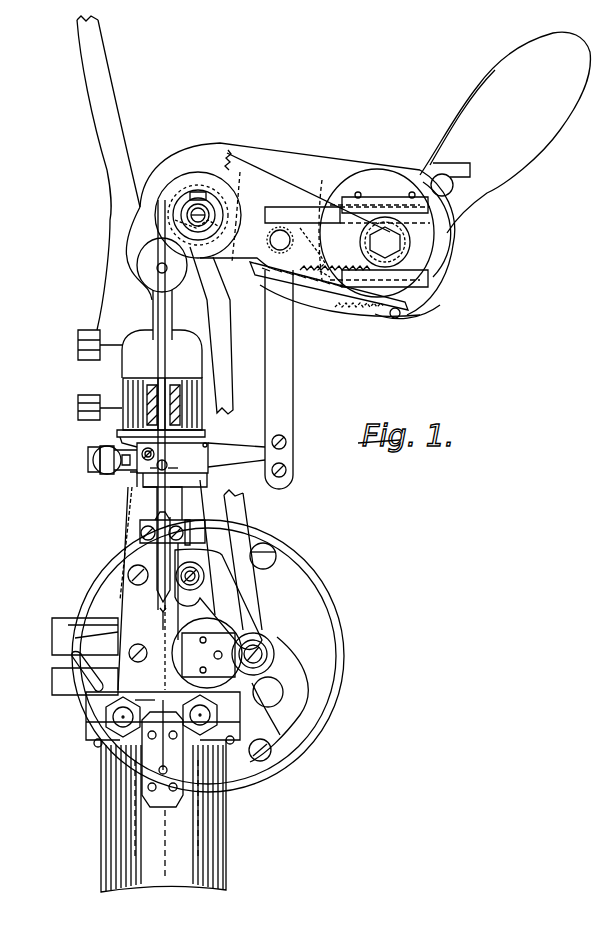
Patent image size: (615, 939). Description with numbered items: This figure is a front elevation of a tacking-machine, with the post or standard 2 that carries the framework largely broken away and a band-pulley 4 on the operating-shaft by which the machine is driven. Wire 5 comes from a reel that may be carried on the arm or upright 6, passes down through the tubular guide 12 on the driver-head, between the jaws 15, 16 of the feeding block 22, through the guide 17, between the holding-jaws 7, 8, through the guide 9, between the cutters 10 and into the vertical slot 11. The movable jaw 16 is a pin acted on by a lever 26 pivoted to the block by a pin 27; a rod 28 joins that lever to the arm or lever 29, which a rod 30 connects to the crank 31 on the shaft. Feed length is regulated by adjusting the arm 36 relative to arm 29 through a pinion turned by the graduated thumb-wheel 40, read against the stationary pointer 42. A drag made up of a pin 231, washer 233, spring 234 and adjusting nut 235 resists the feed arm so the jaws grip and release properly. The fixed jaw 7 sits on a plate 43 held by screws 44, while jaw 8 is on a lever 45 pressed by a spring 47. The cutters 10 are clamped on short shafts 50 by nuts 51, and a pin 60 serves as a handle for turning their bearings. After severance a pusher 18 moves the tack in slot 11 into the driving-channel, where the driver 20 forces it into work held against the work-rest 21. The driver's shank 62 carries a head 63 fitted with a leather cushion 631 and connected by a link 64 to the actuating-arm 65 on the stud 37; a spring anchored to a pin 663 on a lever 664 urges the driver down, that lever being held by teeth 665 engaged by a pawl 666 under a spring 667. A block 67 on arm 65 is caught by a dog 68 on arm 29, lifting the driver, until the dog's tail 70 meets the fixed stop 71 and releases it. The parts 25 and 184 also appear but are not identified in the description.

The post or standard 2 is at (163, 816).
The band-pulley 4 is at (345, 622).
The wire 5 is at (155, 371).
The arm or upright 6 is at (85, 56).
The holding-jaw 7 is at (156, 615).
The holding-jaw 8 is at (200, 604).
The guide 9 is at (157, 637).
The cutters 10 is at (135, 698).
The vertical slot 11 is at (155, 740).
The tubular guide 12 is at (170, 388).
The jaw 15 is at (147, 467).
The movable jaw 16 is at (180, 470).
The guide 17 is at (155, 530).
The pusher 18 is at (165, 768).
The driver 20 is at (151, 603).
The work-rest 21 is at (163, 795).
The block 22 is at (172, 481).
The screw 25 is at (156, 453).
The lever 26 is at (250, 408).
The pin 27 is at (248, 453).
The rod 28 is at (279, 379).
The arm or lever 29 is at (382, 196).
The rod 30 is at (214, 319).
The crank 31 is at (235, 642).
The arm 36 is at (307, 246).
The pin or stud 37 is at (392, 248).
The thumb-wheel 40 is at (170, 181).
The pointer or index 42 is at (192, 193).
The plate 43 is at (113, 633).
The screws 44 is at (100, 650).
The lever 45 is at (217, 599).
The spring 47 is at (198, 524).
The shafts 50 is at (118, 720).
The nuts 51 is at (100, 745).
The projecting pin 60 is at (74, 681).
The bar or shank 62 is at (153, 571).
The head 63 is at (134, 333).
The link 64 is at (168, 309).
The actuating-arm 65 is at (129, 209).
The block 67 is at (214, 159).
The dog 68 is at (246, 170).
The tail 70 is at (269, 237).
The fixed stop 71 is at (282, 202).
The hole 184 is at (290, 691).
The pin 231 is at (83, 462).
The washer 233 is at (130, 490).
The spring 234 is at (122, 437).
The nut 235 is at (93, 475).
The cushion 631 is at (120, 392).
The pin 663 is at (458, 188).
The lever 664 is at (505, 132).
The teeth 665 is at (363, 310).
The dog or pawl 666 is at (330, 300).
The spring 667 is at (391, 326).